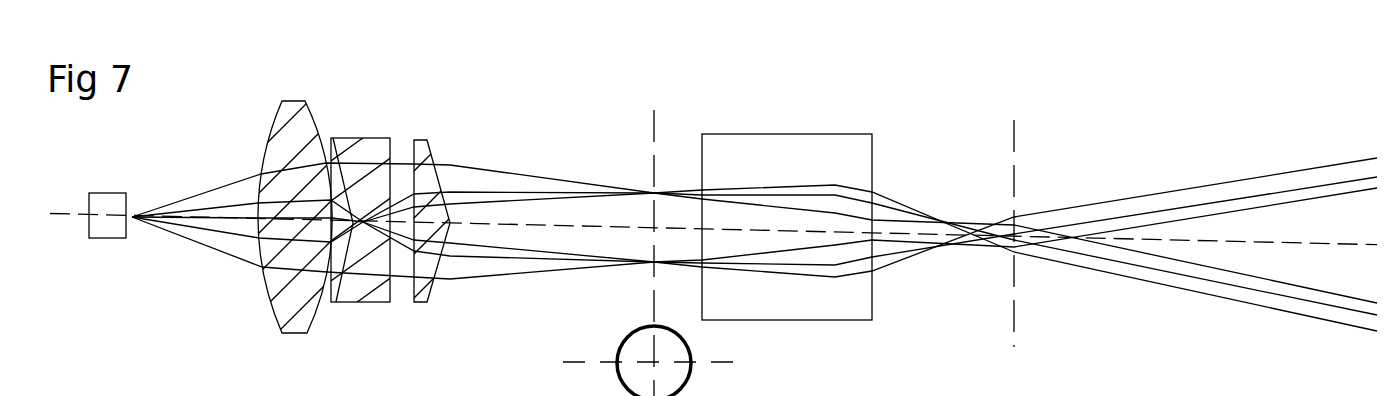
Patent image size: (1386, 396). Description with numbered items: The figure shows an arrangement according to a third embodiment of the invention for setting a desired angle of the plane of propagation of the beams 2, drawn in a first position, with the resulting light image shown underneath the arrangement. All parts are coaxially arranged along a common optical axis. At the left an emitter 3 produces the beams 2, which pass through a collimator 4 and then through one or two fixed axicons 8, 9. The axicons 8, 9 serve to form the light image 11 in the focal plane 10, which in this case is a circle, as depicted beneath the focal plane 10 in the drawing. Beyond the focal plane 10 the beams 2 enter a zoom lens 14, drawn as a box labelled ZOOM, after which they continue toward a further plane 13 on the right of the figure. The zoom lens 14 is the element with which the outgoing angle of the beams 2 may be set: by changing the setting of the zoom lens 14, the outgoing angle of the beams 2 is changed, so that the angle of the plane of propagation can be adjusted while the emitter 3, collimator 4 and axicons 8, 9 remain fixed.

The beams 2 is at (197, 188).
The emitter 3 is at (110, 193).
The collimator 4 is at (293, 102).
The fixed axicon 8 is at (377, 138).
The fixed axicon 9 is at (418, 138).
The focal plane 10 is at (653, 112).
The light image 11 is at (625, 343).
The image plane 13 is at (1014, 118).
The zoom lens 14 is at (775, 134).